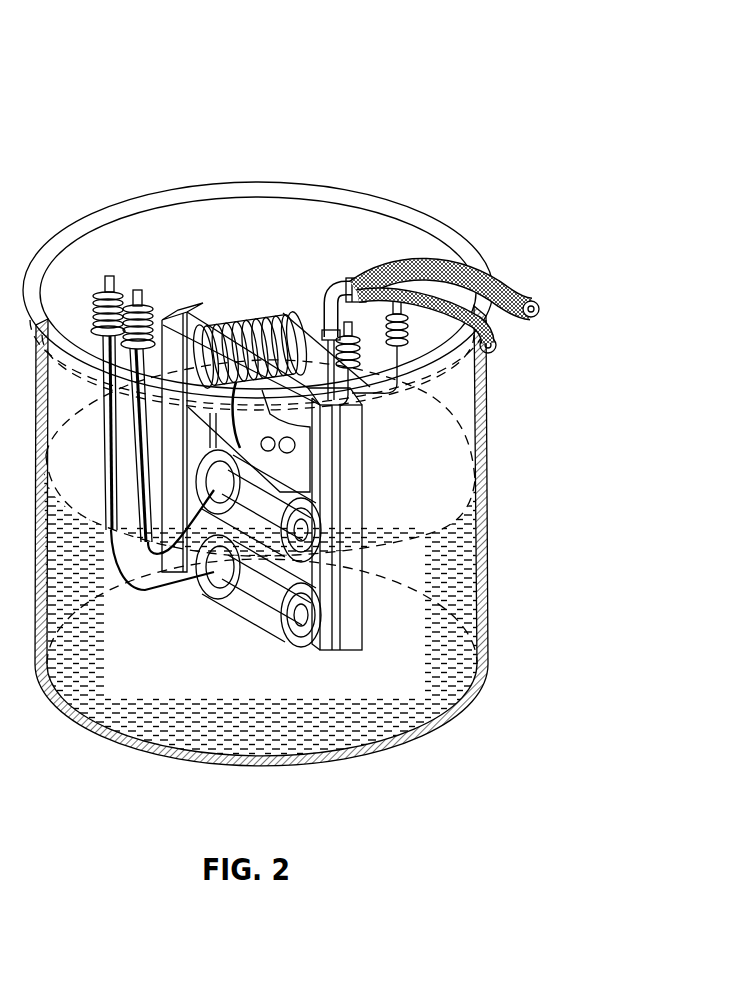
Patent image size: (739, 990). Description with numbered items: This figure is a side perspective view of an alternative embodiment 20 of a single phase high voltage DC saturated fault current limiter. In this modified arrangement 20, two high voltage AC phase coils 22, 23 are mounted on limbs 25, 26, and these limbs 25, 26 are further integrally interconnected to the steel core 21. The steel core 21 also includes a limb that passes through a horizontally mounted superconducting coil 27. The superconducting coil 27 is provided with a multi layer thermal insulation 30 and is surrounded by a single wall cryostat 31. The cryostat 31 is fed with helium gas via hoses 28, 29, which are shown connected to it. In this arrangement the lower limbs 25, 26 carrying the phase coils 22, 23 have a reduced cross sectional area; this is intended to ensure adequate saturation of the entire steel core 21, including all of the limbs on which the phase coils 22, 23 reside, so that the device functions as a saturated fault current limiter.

The alternative embodiment of a single phase current limiter 20 is at (481, 179).
The steel core 21 is at (365, 470).
The high voltage AC phase coil 22 is at (140, 592).
The high voltage AC phase coil 23 is at (216, 588).
The limb 25 is at (305, 548).
The limb 26 is at (322, 618).
The superconducting coil 27 is at (235, 330).
The hose 28 is at (500, 276).
The hose 29 is at (486, 392).
The multi layer thermal insulation 30 is at (214, 338).
The single wall cryostat 31 is at (193, 322).